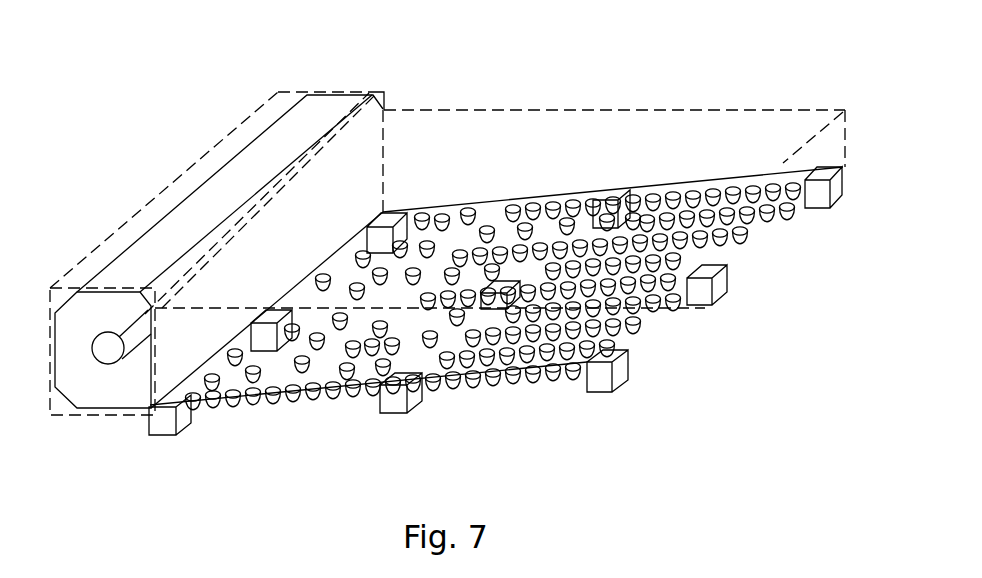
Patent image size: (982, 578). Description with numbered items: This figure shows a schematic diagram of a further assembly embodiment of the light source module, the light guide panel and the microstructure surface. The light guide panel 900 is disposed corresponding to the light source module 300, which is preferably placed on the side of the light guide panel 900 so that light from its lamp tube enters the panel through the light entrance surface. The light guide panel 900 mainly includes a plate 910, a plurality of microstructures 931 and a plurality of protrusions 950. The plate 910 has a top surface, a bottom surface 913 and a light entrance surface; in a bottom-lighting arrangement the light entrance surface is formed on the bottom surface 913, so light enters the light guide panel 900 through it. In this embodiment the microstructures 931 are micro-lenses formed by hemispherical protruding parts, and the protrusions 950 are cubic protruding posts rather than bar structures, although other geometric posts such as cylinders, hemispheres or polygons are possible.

The light source module 300 is at (53, 333).
The plate 910 is at (187, 338).
The bottom surface 913 is at (473, 277).
The microstructures 931 is at (256, 405).
The protrusions 950 is at (167, 420).
The light guide panel 900 is at (813, 153).